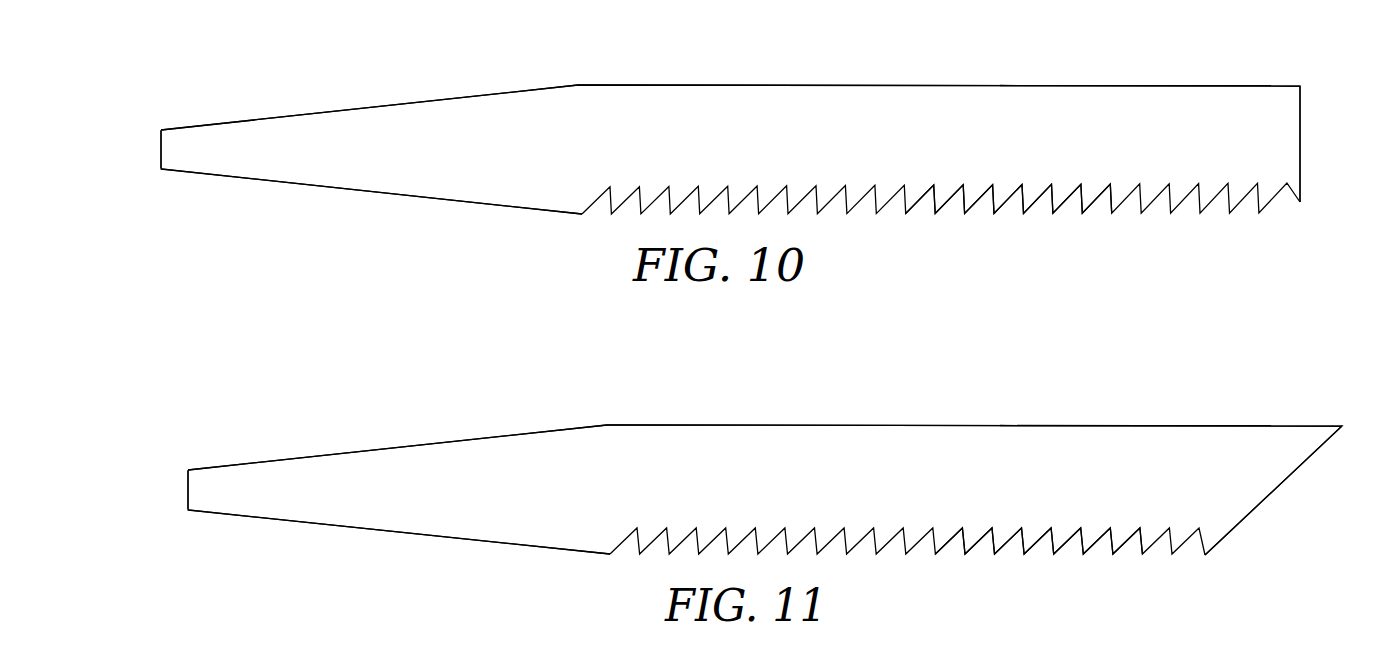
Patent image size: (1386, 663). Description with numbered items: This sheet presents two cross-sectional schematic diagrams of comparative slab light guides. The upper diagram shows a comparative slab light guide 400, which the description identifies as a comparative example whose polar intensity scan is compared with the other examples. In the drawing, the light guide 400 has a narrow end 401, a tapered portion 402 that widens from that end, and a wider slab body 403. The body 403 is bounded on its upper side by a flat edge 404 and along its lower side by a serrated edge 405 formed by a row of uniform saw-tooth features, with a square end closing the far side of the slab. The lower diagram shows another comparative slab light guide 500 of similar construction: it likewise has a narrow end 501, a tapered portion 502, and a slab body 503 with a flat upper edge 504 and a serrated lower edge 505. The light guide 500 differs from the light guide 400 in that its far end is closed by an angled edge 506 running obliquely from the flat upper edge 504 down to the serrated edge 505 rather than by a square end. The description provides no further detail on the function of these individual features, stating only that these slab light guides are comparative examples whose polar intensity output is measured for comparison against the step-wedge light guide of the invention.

In FIG. 10, the probe tip 400 is at (483, 47).
In FIG. 10, the proximal end 401 is at (160, 150).
In FIG. 10, the tapered portion 402 is at (375, 158).
In FIG. 10, the body portion 403 is at (850, 140).
In FIG. 10, the smooth top edge 404 is at (1108, 83).
In FIG. 10, the serrated edge 405 is at (1030, 217).
In FIG. 11, the probe tip 500 is at (510, 387).
In FIG. 11, the proximal end 501 is at (188, 491).
In FIG. 11, the tapered portion 502 is at (403, 499).
In FIG. 11, the body portion 503 is at (877, 480).
In FIG. 11, the smooth top edge 504 is at (1135, 423).
In FIG. 11, the serrated edge 505 is at (1057, 558).
In FIG. 11, the angled distal edge 506 is at (1256, 506).